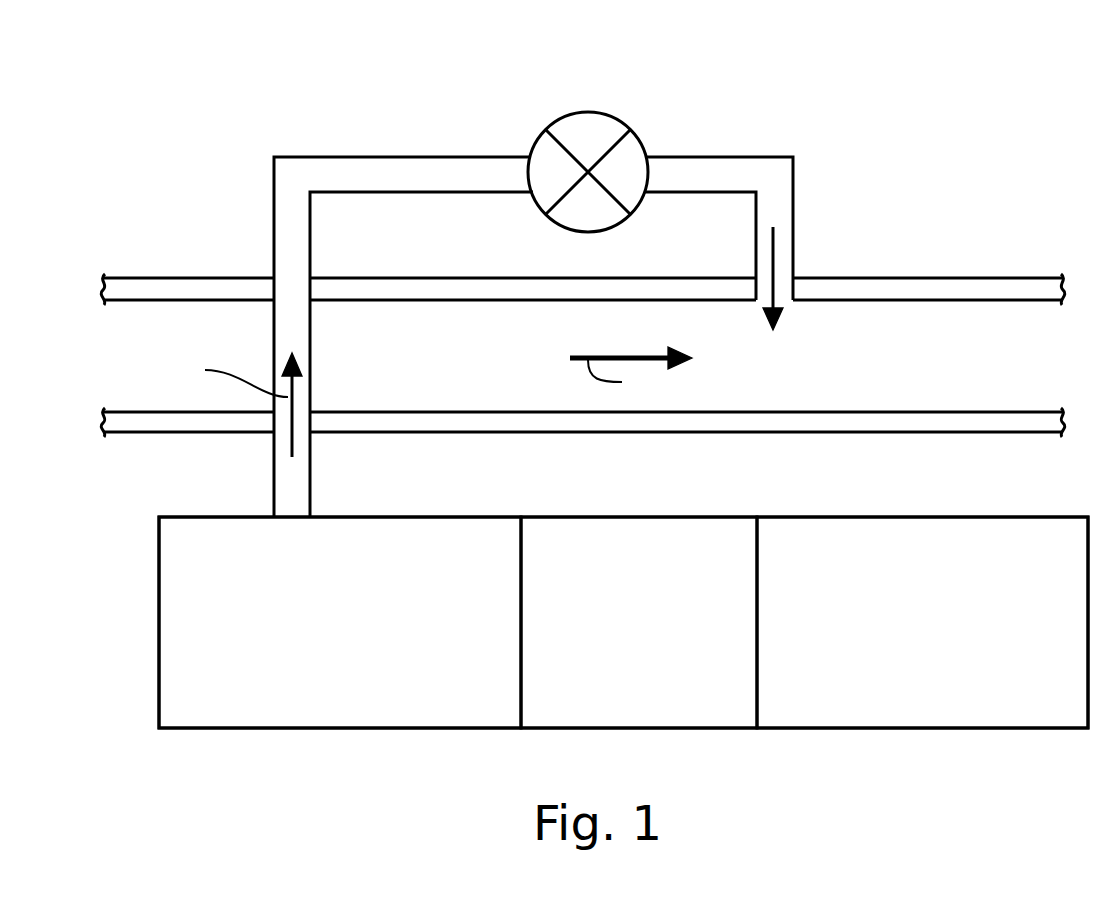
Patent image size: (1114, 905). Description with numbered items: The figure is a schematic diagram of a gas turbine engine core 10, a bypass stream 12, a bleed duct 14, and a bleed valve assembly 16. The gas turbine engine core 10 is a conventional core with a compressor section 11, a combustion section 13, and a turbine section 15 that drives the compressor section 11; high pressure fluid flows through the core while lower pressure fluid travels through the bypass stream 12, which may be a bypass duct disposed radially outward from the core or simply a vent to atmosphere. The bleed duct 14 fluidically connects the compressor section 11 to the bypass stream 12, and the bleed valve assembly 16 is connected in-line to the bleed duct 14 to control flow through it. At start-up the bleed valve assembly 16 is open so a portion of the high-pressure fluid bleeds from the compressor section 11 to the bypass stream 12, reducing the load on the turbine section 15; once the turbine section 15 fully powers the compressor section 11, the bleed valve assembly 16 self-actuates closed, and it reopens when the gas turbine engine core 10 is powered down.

The gas turbine engine core 10 is at (138, 607).
The compressor section 11 is at (308, 690).
The bypass stream 12 is at (398, 351).
The combustion section 13 is at (605, 690).
The bleed duct 14 is at (338, 157).
The turbine section 15 is at (897, 690).
The bleed valve assembly 16 is at (567, 110).